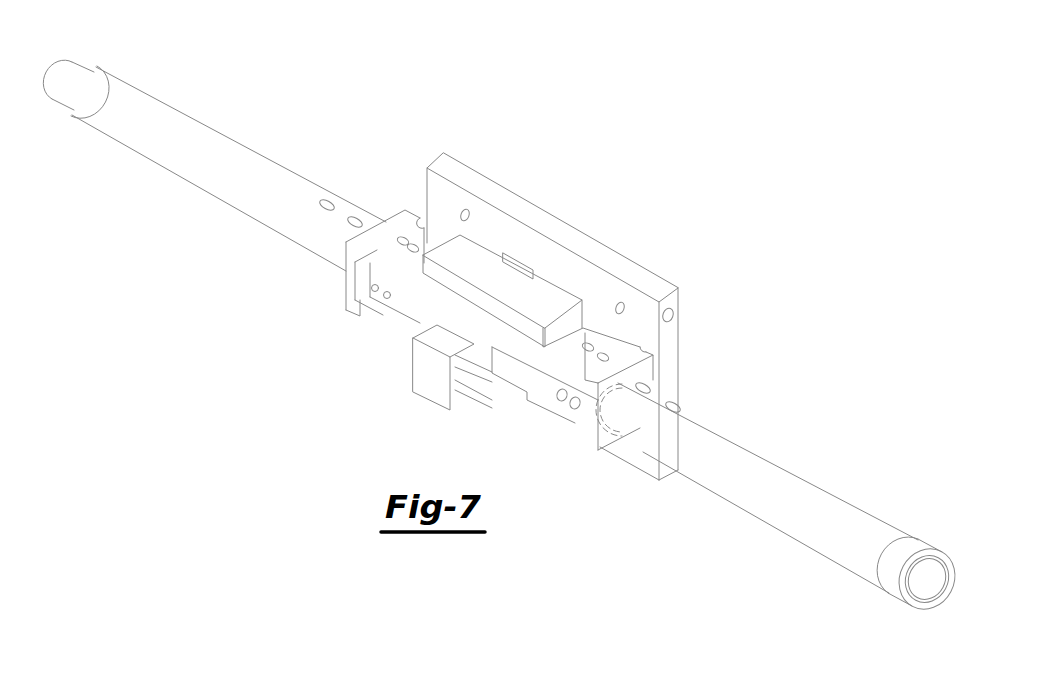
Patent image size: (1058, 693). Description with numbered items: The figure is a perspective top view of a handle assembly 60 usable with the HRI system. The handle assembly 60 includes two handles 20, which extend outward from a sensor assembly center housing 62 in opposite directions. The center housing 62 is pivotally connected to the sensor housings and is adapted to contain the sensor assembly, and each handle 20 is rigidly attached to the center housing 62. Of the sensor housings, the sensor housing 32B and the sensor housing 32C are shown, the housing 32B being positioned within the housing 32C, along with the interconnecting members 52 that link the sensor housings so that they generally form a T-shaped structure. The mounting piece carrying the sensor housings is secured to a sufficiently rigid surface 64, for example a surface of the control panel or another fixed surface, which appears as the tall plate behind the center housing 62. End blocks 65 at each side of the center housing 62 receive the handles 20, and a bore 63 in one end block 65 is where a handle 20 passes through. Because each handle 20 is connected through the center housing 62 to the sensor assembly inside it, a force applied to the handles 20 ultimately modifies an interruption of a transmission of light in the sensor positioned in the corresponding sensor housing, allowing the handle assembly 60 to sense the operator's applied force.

The handle 20 is at (168, 143).
The handle assembly 60 is at (650, 135).
The rigid surface 64 is at (490, 193).
The end block 65 is at (393, 212).
The sensor assembly center housing 62 is at (487, 272).
The bore 63 is at (612, 403).
The connecting members 52 is at (552, 388).
The sensor housing 32C is at (428, 373).
The sensor housing 32B is at (462, 368).